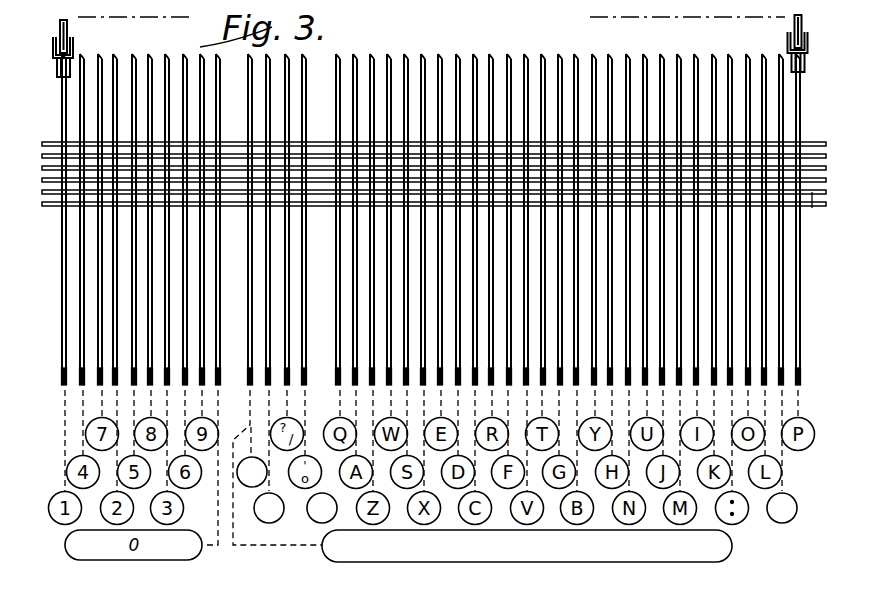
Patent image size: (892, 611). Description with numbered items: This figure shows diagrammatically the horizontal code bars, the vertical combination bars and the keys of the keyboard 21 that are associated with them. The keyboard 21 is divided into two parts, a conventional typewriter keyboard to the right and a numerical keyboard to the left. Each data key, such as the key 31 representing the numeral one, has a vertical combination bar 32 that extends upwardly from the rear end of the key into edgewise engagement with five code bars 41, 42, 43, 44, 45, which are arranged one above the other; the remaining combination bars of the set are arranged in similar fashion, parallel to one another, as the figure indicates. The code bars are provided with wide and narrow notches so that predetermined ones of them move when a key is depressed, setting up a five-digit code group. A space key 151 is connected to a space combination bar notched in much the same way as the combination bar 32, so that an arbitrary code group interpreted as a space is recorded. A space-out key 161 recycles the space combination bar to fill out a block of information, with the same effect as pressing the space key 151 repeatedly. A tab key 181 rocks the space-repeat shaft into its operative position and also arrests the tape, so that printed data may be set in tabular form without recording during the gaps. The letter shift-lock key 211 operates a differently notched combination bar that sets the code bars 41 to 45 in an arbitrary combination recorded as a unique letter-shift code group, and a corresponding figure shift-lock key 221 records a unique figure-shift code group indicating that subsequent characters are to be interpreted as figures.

The keyboard 21 is at (740, 527).
The data key 31 is at (60, 382).
The vertical combination bar 32 is at (100, 310).
The code bar 41 is at (826, 143).
The code bar 42 is at (827, 155).
The code bar 43 is at (828, 167).
The code bar 44 is at (826, 207).
The code bar 45 is at (827, 196).
The space key 151 is at (613, 553).
The space-out key 161 is at (249, 484).
The tab key 181 is at (315, 518).
The letter shift-lock key 211 is at (269, 522).
The figure shift-lock key 221 is at (780, 519).